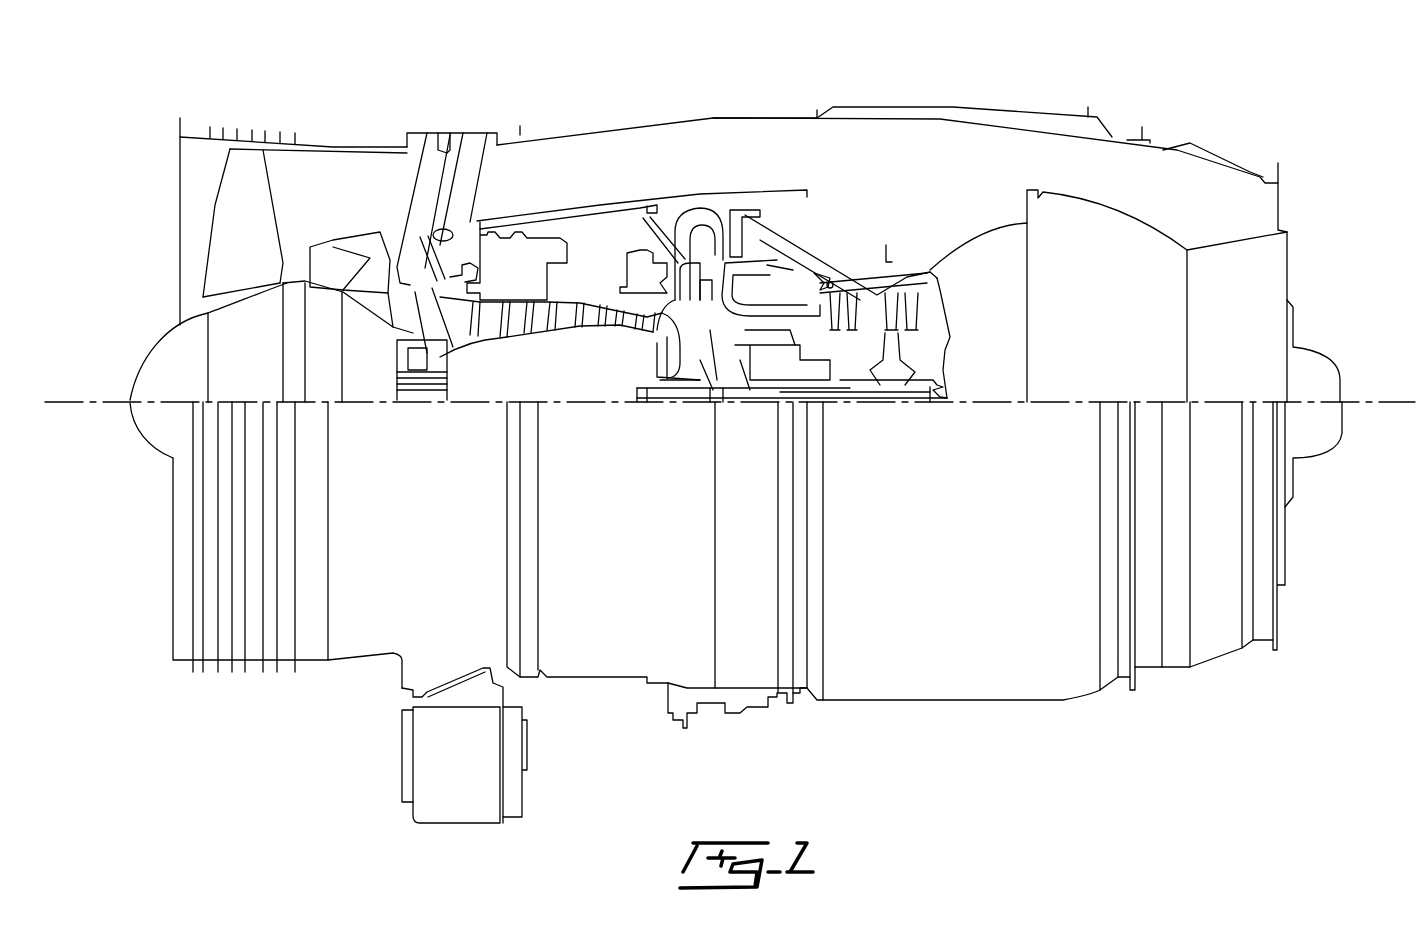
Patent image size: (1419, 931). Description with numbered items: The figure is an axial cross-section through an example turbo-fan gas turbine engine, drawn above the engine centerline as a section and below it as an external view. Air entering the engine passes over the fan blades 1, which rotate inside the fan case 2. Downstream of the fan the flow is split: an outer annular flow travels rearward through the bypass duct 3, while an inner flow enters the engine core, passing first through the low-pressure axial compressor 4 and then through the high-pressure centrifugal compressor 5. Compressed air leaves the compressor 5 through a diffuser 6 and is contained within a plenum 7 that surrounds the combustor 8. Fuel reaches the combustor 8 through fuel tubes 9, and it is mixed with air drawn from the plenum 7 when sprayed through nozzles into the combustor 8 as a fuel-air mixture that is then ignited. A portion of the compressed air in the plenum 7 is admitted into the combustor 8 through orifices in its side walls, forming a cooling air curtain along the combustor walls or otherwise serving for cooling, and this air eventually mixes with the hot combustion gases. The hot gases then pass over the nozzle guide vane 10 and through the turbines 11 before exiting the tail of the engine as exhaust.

The fan blades 1 is at (253, 246).
The fan case 2 is at (309, 137).
The bypass duct 3 is at (593, 181).
The low-pressure axial compressor 4 is at (490, 342).
The high-pressure centrifugal compressor 5 is at (652, 330).
The diffuser 6 is at (712, 228).
The plenum 7 is at (783, 270).
The combustor 8 is at (772, 298).
The fuel tubes 9 is at (787, 270).
The nozzle guide vane 10 is at (835, 300).
The turbines 11 is at (843, 297).